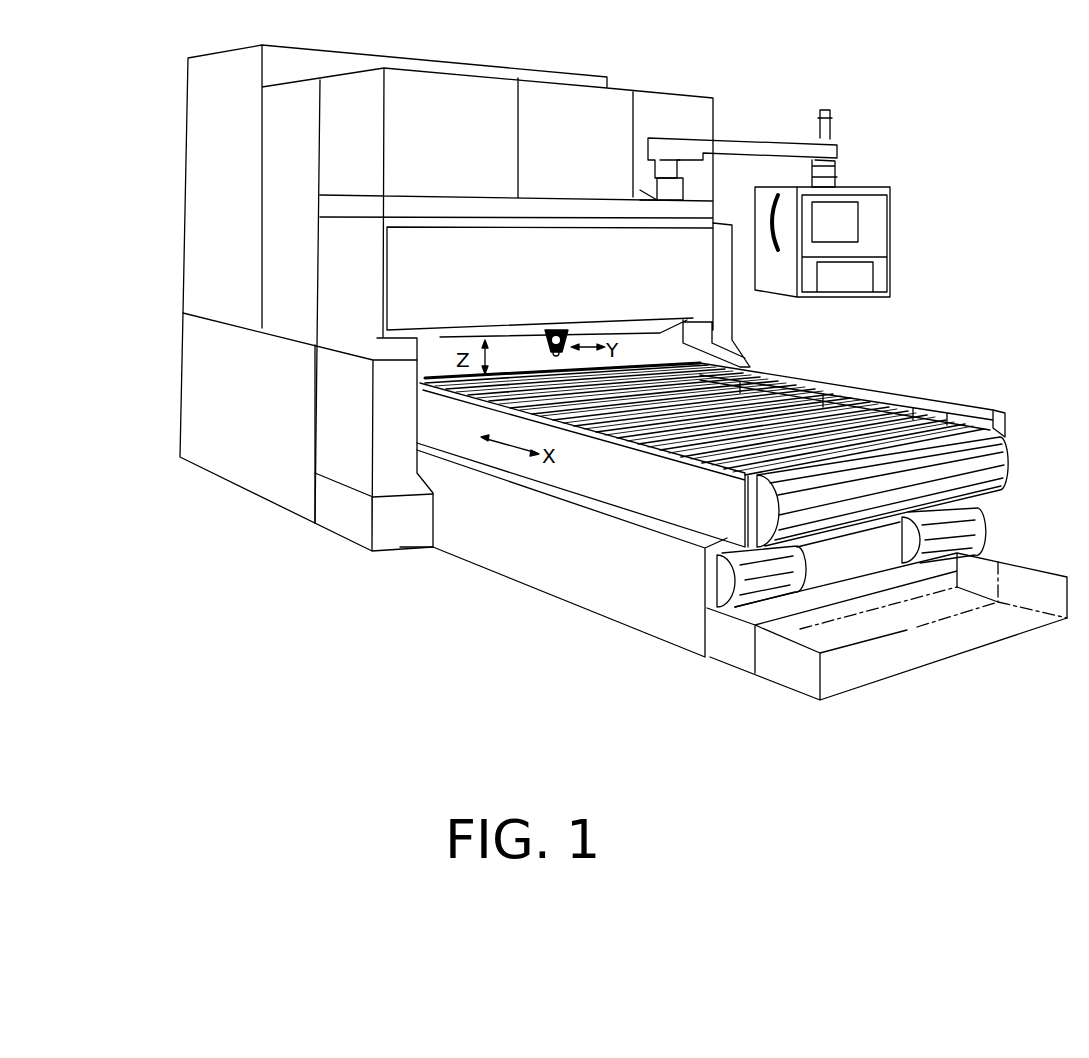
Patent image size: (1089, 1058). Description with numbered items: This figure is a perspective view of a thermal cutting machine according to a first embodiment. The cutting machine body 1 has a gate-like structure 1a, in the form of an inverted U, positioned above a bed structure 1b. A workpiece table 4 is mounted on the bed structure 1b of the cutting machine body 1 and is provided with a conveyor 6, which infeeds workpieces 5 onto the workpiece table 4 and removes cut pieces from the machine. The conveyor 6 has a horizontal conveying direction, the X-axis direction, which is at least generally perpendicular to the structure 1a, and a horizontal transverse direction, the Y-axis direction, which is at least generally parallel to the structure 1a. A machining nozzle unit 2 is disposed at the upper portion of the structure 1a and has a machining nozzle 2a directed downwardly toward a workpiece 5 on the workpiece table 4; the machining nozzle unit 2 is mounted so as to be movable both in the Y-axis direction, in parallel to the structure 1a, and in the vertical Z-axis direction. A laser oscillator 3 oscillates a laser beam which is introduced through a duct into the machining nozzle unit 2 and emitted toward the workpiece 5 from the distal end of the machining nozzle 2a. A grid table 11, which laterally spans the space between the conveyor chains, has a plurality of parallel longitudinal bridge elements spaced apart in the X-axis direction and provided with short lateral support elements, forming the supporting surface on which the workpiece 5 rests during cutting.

The cutting machine body 1 is at (213, 407).
The gate-like structure 1a is at (325, 452).
The bed structure 1b is at (582, 593).
The machining nozzle unit 2 is at (567, 332).
The machining nozzle 2a is at (550, 356).
The laser oscillator 3 is at (198, 180).
The workpiece table 4 is at (587, 473).
The workpiece 5 is at (745, 388).
The conveyor 6 is at (990, 450).
The grid table 11 is at (875, 432).